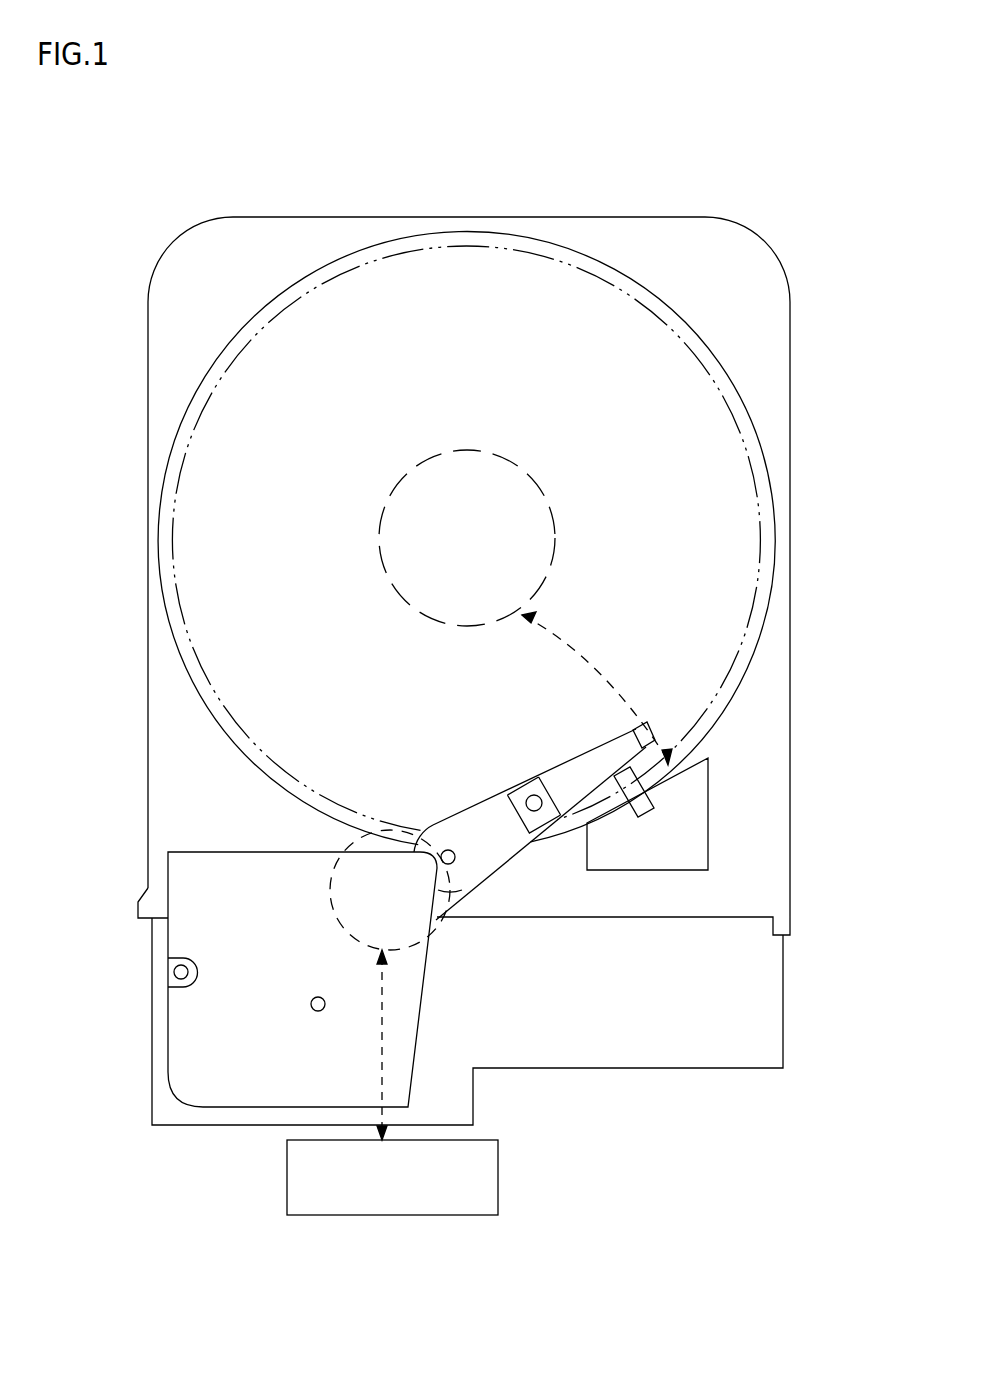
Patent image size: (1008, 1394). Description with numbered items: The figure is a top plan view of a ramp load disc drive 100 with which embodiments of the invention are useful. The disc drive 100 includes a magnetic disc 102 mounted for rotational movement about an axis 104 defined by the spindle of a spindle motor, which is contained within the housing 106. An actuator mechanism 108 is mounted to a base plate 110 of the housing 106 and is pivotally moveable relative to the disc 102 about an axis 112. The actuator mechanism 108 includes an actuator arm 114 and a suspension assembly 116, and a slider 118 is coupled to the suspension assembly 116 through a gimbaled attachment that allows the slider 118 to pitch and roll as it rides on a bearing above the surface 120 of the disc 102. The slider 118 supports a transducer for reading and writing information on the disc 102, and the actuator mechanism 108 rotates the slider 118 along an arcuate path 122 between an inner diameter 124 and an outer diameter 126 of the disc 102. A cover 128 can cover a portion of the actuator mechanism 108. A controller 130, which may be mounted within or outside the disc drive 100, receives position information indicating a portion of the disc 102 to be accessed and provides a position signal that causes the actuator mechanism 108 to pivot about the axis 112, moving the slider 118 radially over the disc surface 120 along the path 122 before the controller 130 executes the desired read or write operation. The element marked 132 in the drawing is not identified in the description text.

The ramp load disc drive 100 is at (288, 205).
The magnetic disc 102 is at (472, 361).
The axis 104 is at (490, 537).
The housing 106 is at (789, 341).
The actuator mechanism 108 is at (446, 993).
The base plate 110 is at (672, 1068).
The axis 112 is at (388, 891).
The actuator arm 114 is at (472, 870).
The suspension assembly 116 is at (566, 767).
The slider 118 is at (637, 728).
The surface 120 is at (725, 483).
The arcuate path 122 is at (573, 640).
The inner diameter 124 is at (556, 531).
The outer diameter 126 is at (764, 521).
The cover 128 is at (222, 1090).
The controller 130 is at (498, 1182).
The slider 132 is at (643, 808).